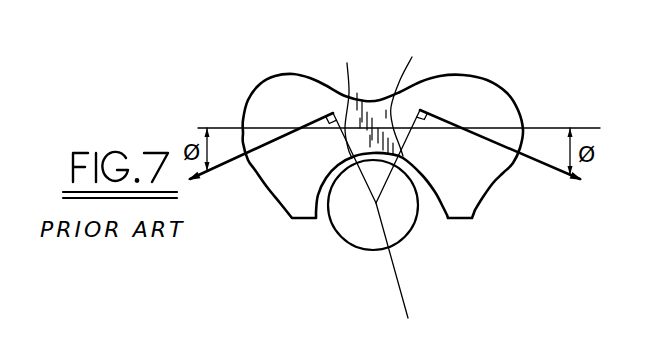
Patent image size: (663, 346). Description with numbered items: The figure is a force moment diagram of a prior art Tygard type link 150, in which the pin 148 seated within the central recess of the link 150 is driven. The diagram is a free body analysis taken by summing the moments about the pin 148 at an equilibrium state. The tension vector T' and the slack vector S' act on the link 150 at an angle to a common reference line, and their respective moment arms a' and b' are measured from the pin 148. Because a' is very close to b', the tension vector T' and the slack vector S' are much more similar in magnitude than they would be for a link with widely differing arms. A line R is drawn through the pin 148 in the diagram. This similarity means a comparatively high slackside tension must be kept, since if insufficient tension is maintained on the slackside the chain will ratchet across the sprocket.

The pin 148 is at (413, 232).
The link 150 is at (506, 89).
The moment arm a' is at (405, 97).
The moment arm b' is at (344, 99).
The slack vector S' is at (282, 158).
The tension vector T' is at (494, 156).
The radius line R is at (418, 297).